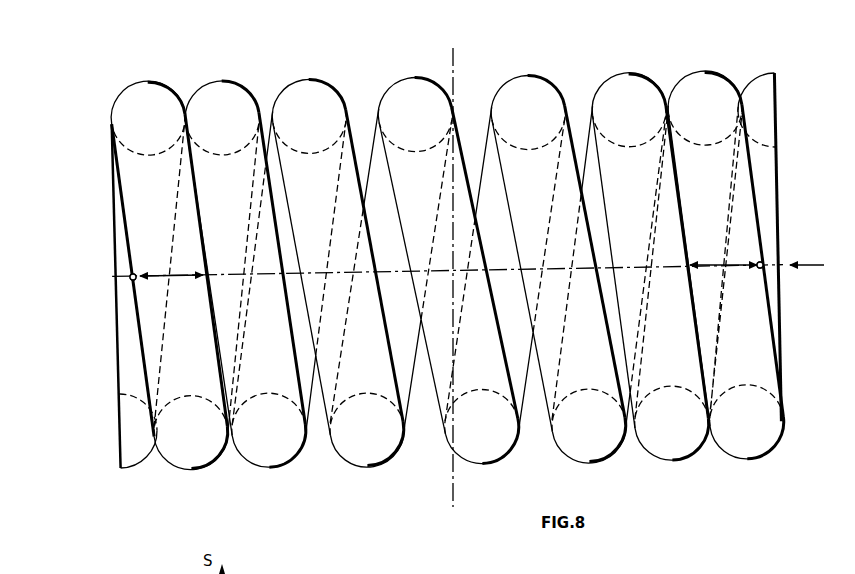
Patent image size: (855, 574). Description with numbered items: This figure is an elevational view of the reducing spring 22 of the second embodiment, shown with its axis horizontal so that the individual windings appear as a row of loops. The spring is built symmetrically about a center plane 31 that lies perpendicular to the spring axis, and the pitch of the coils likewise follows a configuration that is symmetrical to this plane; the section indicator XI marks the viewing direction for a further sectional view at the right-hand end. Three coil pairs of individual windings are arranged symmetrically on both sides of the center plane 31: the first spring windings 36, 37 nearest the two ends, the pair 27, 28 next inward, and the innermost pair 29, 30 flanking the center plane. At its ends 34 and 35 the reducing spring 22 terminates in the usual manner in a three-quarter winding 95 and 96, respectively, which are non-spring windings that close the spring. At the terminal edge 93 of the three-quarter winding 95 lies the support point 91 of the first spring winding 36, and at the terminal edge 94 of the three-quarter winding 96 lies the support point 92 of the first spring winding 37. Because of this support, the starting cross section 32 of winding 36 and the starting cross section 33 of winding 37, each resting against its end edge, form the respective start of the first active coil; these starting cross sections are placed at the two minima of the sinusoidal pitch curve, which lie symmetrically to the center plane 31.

The reducing spring 22 is at (293, 74).
The spring winding 27 is at (630, 72).
The spring winding 28 is at (277, 473).
The spring winding 29 is at (536, 75).
The spring winding 30 is at (369, 473).
The center plane 31 is at (449, 67).
The starting cross section 32 is at (736, 271).
The starting cross section 33 is at (182, 281).
The spring end 34 is at (777, 158).
The spring end 35 is at (114, 234).
The first spring winding 36 is at (703, 72).
The first spring winding 37 is at (193, 475).
The support point 91 is at (765, 262).
The support point 92 is at (129, 283).
The terminal edge 93 is at (770, 268).
The terminal edge 94 is at (130, 276).
The three-quarter winding 95 is at (764, 88).
The three-quarter winding 96 is at (133, 458).
The section indicator XI is at (808, 254).